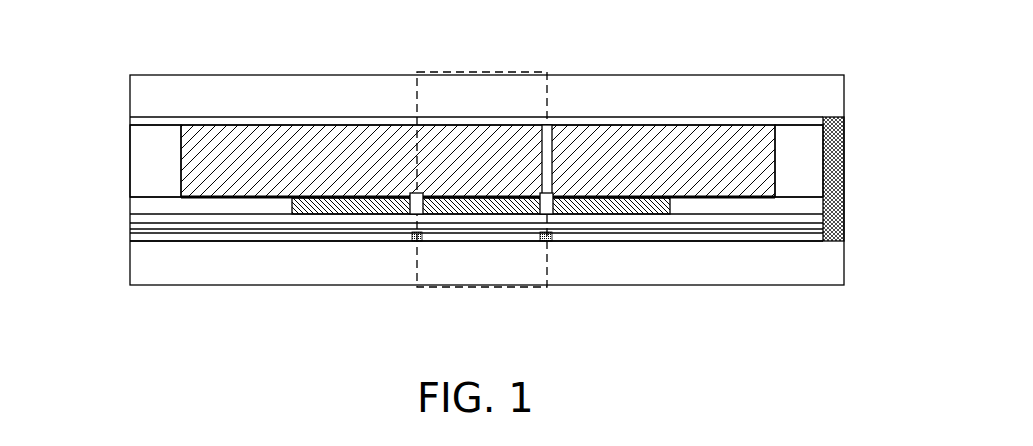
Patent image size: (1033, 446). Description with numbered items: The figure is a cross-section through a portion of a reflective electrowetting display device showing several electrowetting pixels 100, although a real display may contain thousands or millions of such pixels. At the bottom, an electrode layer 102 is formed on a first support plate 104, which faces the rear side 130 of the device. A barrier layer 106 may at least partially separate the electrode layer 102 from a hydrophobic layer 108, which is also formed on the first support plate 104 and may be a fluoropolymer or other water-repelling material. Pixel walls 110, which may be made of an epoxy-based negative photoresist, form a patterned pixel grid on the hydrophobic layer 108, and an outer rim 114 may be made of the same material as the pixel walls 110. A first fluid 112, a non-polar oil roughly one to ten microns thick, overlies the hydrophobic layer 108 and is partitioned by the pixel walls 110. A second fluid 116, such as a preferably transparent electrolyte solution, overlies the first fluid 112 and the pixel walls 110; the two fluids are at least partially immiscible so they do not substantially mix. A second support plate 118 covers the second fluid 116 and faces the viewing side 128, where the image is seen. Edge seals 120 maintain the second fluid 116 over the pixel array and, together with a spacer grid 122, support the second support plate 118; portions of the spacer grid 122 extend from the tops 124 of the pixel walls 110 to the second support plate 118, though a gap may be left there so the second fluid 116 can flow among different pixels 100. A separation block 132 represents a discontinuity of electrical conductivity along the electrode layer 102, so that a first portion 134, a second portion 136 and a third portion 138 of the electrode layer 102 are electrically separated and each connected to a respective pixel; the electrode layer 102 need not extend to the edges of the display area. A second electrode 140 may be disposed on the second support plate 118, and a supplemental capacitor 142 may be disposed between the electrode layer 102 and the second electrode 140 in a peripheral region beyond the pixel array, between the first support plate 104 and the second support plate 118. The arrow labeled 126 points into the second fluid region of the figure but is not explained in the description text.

The electrowetting pixels 100 is at (416, 272).
The electrode layer 102 is at (130, 238).
The first support plate 104 is at (177, 276).
The barrier layer 106 is at (130, 227).
The hydrophobic layer 108 is at (130, 218).
The pixel walls 110 is at (419, 214).
The first fluid 112 is at (603, 214).
The outer rim 114 is at (130, 207).
The second fluid 116 is at (287, 171).
The second support plate 118 is at (207, 107).
The edge seals 120 is at (173, 169).
The spacer grid 122 is at (553, 138).
The tops of pixel walls 124 is at (410, 194).
The active region 126 is at (403, 128).
The viewing side 128 is at (581, 33).
The rear side 130 is at (256, 312).
The separation block 132 is at (408, 237).
The first portion of electrode layer 134 is at (275, 243).
The second portion of electrode layer 136 is at (525, 242).
The third portion of electrode layer 138 is at (733, 242).
The second electrode 140 is at (237, 117).
The supplemental capacitor 142 is at (836, 242).